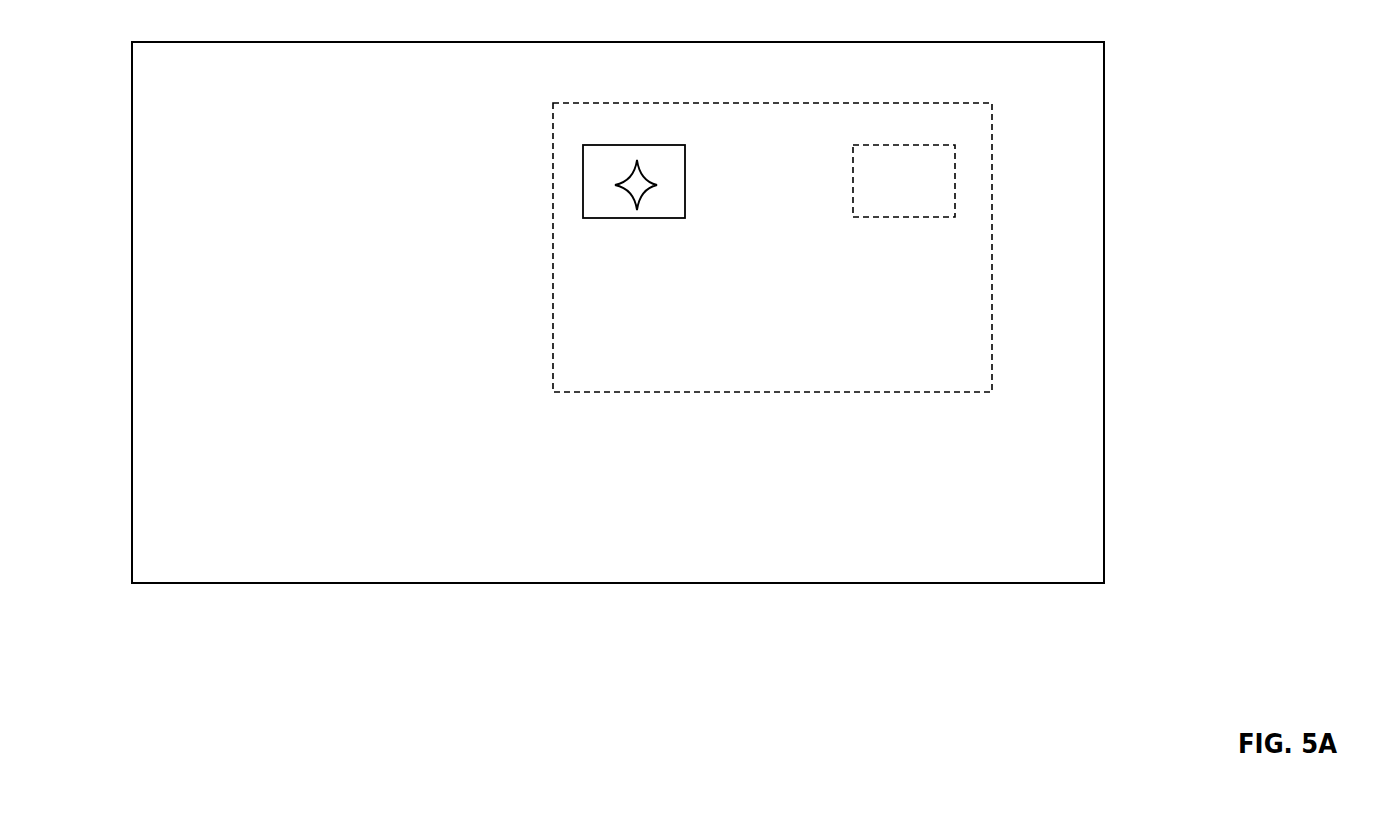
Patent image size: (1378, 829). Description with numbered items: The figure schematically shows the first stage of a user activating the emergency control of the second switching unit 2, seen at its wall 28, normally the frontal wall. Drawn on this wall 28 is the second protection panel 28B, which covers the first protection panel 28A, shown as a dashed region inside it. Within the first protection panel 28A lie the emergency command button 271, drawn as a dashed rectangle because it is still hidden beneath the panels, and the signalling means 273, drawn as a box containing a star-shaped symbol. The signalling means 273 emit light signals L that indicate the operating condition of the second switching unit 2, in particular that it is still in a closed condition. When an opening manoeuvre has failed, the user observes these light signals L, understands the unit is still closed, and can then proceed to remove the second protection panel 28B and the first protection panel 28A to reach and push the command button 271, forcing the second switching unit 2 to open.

The second switching unit 2 is at (1188, 182).
The wall 28 is at (1117, 324).
The first protection panel 28A is at (722, 365).
The second protection panel 28B is at (768, 557).
The emergency command button 271 is at (908, 220).
The signalling means 273 is at (638, 218).
The light signals L is at (656, 181).